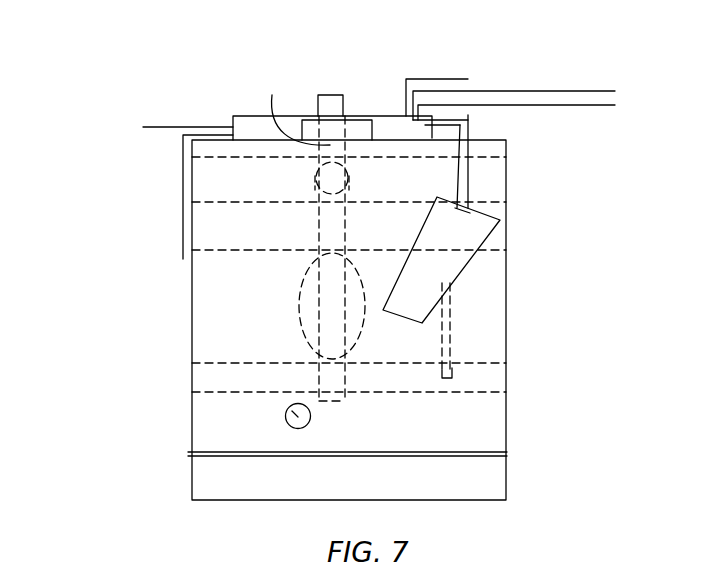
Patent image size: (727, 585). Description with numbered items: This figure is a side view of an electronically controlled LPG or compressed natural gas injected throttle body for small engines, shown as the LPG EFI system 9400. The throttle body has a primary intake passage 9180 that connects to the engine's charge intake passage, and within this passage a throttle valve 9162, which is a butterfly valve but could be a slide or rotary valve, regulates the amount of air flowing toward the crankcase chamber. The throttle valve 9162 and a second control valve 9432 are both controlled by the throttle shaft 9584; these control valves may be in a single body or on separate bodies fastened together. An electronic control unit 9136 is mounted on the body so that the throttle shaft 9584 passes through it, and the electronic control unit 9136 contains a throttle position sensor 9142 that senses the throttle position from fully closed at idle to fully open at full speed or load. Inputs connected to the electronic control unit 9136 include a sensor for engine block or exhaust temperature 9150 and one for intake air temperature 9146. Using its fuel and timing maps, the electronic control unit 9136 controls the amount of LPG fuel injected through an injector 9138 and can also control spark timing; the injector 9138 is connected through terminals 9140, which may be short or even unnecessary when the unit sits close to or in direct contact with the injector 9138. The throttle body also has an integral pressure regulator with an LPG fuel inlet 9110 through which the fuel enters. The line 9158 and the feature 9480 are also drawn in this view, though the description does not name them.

The LPG EFI system 9400 is at (102, 123).
The primary intake passage 9180 is at (208, 333).
The intake air temperature 9146 is at (183, 259).
The line 9158 is at (175, 124).
The throttle valve 9432 is at (237, 140).
The throttle shaft 9584 is at (312, 183).
The throttle position sensor 9142 is at (366, 137).
The electronic control unit 9136 is at (392, 137).
The terminals 9140 is at (478, 90).
The engine block temperature or exhaust temperature 9150 is at (545, 103).
The injector 9138 is at (465, 238).
The cavity 9480 is at (213, 173).
The throttle valve 9162 is at (310, 323).
The LPG fuel inlet 9110 is at (285, 408).